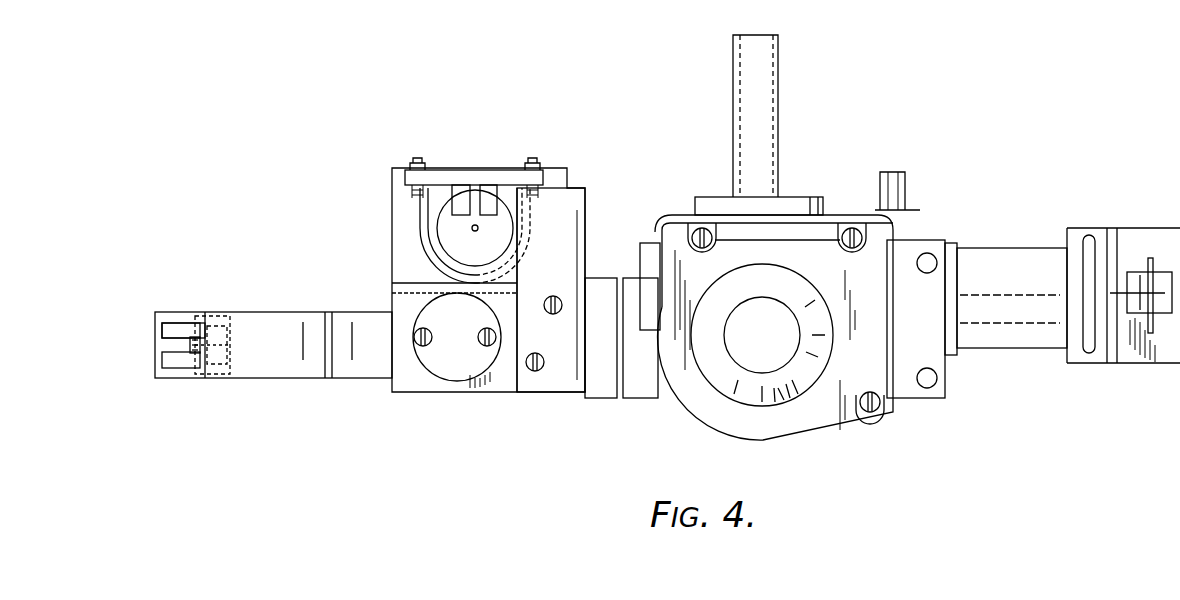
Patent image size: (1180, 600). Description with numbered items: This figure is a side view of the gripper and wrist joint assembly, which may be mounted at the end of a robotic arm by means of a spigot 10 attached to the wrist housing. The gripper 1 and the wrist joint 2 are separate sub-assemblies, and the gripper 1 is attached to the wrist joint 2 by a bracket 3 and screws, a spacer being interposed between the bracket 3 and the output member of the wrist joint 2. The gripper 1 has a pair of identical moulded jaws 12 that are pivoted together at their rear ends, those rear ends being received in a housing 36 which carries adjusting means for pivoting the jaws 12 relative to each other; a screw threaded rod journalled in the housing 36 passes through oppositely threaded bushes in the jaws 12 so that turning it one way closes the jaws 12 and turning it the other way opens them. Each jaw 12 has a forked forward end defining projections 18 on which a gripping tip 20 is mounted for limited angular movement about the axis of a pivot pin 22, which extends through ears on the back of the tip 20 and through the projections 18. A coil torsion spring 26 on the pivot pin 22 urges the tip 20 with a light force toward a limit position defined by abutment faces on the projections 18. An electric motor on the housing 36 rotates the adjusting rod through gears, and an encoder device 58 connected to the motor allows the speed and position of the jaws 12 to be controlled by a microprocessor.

The gripper 1 is at (430, 402).
The wrist joint 2 is at (876, 425).
The bracket 3 is at (590, 195).
The spigot 10 is at (763, 128).
The jaws 12 is at (290, 360).
The projections 18 is at (168, 333).
The gripping tip 20 is at (180, 312).
The pivot pin 22 is at (215, 310).
The coil torsion spring 26 is at (198, 364).
The housing 36 is at (470, 384).
The encoder device 58 is at (483, 168).